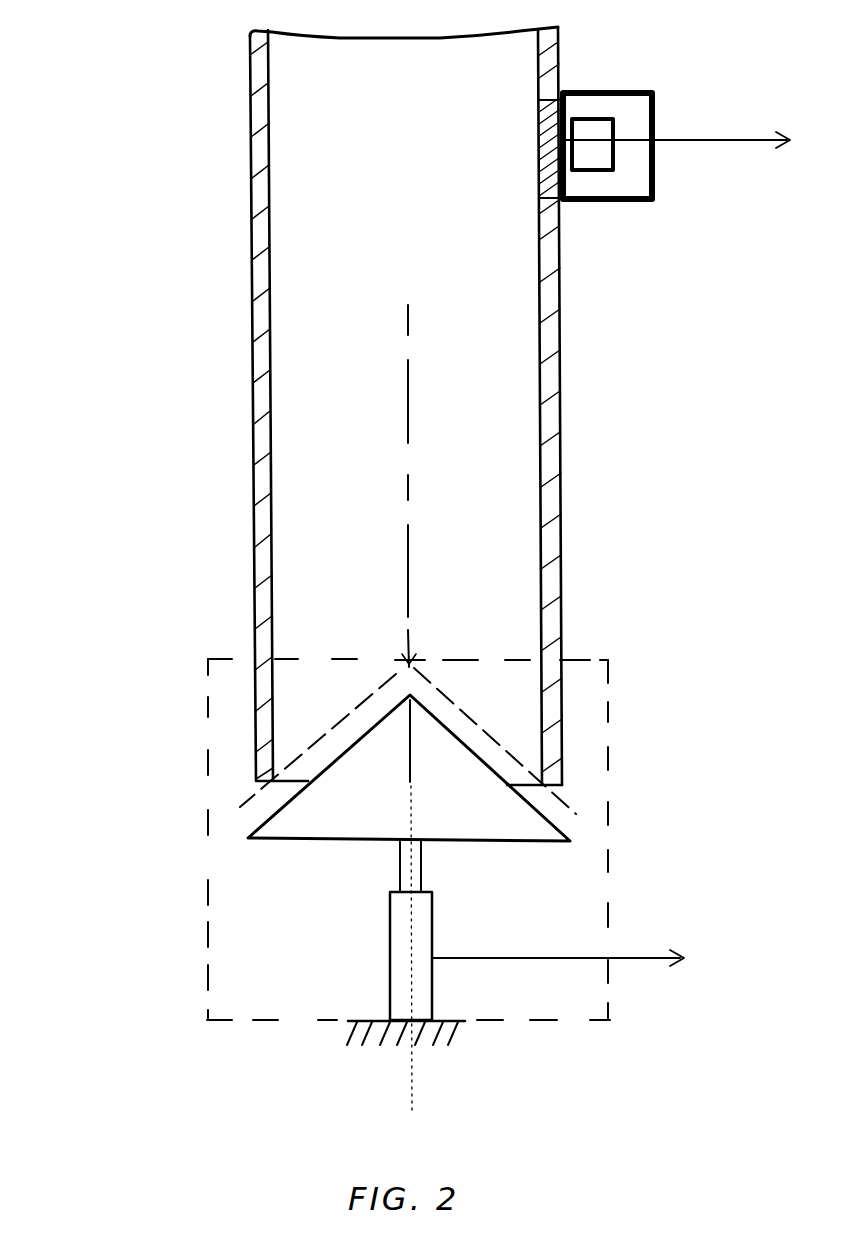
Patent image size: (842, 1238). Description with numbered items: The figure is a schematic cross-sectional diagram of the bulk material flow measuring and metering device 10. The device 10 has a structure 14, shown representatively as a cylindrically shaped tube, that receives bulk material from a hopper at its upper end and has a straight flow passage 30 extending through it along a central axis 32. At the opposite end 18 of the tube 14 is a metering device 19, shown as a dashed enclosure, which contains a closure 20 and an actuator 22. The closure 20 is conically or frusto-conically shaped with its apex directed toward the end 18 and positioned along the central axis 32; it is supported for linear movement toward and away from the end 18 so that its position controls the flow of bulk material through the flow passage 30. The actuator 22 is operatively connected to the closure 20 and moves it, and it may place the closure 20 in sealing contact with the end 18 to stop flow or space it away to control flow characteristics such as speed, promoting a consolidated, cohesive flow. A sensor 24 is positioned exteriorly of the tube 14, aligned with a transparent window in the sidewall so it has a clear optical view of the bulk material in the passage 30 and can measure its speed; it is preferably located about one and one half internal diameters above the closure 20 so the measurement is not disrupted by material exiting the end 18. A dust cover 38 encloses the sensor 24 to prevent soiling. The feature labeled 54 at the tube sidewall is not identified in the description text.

The device 10 is at (84, 146).
The structure 14 is at (250, 378).
The end of the tube 18 is at (262, 764).
The metering device 19 is at (608, 763).
The closure 20 is at (316, 828).
The actuator 22 is at (424, 912).
The sensor 24 is at (592, 132).
The flow passage 30 is at (506, 497).
The central axis 32 is at (408, 440).
The dust cover 38 is at (656, 184).
The window 54 is at (538, 140).